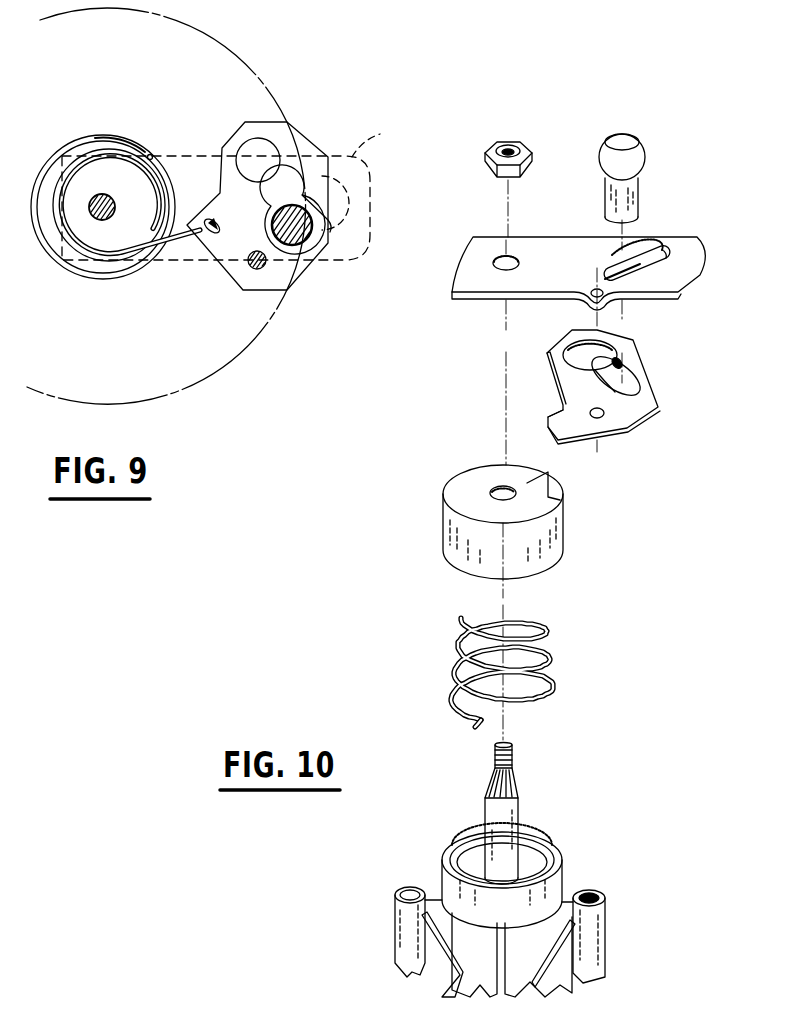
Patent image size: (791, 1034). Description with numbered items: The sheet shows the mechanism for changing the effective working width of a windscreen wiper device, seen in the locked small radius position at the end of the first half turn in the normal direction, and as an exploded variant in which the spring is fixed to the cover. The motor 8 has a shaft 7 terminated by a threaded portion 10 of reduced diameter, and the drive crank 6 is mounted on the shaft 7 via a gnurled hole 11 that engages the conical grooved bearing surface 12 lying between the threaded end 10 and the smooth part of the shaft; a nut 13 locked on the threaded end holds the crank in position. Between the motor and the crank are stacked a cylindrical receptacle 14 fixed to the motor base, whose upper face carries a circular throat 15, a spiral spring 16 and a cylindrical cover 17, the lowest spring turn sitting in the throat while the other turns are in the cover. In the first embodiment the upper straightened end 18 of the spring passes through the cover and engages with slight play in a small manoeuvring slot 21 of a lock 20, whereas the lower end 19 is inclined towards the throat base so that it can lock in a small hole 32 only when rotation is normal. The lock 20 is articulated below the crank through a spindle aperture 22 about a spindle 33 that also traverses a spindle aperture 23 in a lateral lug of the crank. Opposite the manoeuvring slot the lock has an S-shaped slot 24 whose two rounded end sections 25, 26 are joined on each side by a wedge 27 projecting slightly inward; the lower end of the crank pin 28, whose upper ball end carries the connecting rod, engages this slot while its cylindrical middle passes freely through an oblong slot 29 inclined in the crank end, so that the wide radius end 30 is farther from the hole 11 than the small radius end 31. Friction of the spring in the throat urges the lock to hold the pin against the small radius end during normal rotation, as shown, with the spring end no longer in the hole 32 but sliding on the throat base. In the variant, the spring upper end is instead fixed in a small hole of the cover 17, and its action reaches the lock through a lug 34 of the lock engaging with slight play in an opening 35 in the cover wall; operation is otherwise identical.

In FIG. 9, the drive crank 6 is at (376, 181).
In FIG. 10, the drive crank 6 is at (478, 230).
In FIG. 9, the shaft 7 is at (95, 193).
In FIG. 10, the shaft 7 is at (498, 813).
In FIG. 10, the motor 8 is at (593, 935).
In FIG. 10, the threaded portion 10 is at (495, 750).
In FIG. 10, the gnurled hole 11 is at (495, 263).
In FIG. 10, the conical grooved bearing surface 12 is at (513, 780).
In FIG. 10, the nut 13 is at (508, 140).
In FIG. 10, the cylindrical receptacle 14 is at (568, 842).
In FIG. 9, the circular throat 15 is at (163, 175).
In FIG. 10, the circular throat 15 is at (450, 855).
In FIG. 9, the spiral spring 16 is at (67, 142).
In FIG. 10, the spiral spring 16 is at (555, 664).
In FIG. 10, the cylindrical cover 17 is at (566, 545).
In FIG. 9, the upper straightened end 18 is at (210, 229).
In FIG. 9, the lower end 19 is at (117, 137).
In FIG. 10, the lower end 19 is at (475, 727).
In FIG. 9, the lock 20 is at (326, 151).
In FIG. 10, the lock 20 is at (661, 416).
In FIG. 9, the manoeuvring slot 21 is at (200, 233).
In FIG. 10, the spindle aperture 22 is at (600, 417).
In FIG. 10, the spindle aperture 23 is at (593, 291).
In FIG. 9, the S-shaped slot 24 is at (280, 175).
In FIG. 10, the S-shaped slot 24 is at (608, 377).
In FIG. 10, the rounded end section 25 is at (632, 384).
In FIG. 9, the rounded end section 26 is at (247, 150).
In FIG. 10, the rounded end section 26 is at (565, 348).
In FIG. 9, the wedge 27 is at (290, 178).
In FIG. 10, the wedge 27 is at (620, 362).
In FIG. 9, the crank pin 28 is at (294, 238).
In FIG. 10, the crank pin 28 is at (638, 142).
In FIG. 10, the oblong slot 29 is at (638, 246).
In FIG. 9, the wide radius end 30 is at (383, 135).
In FIG. 10, the wide radius end 30 is at (665, 242).
In FIG. 10, the small radius end 31 is at (602, 272).
In FIG. 9, the small hole 32 is at (150, 157).
In FIG. 10, the small hole 32 is at (543, 828).
In FIG. 9, the spindle 33 is at (250, 270).
In FIG. 10, the lug 34 is at (563, 422).
In FIG. 10, the opening 35 is at (538, 492).